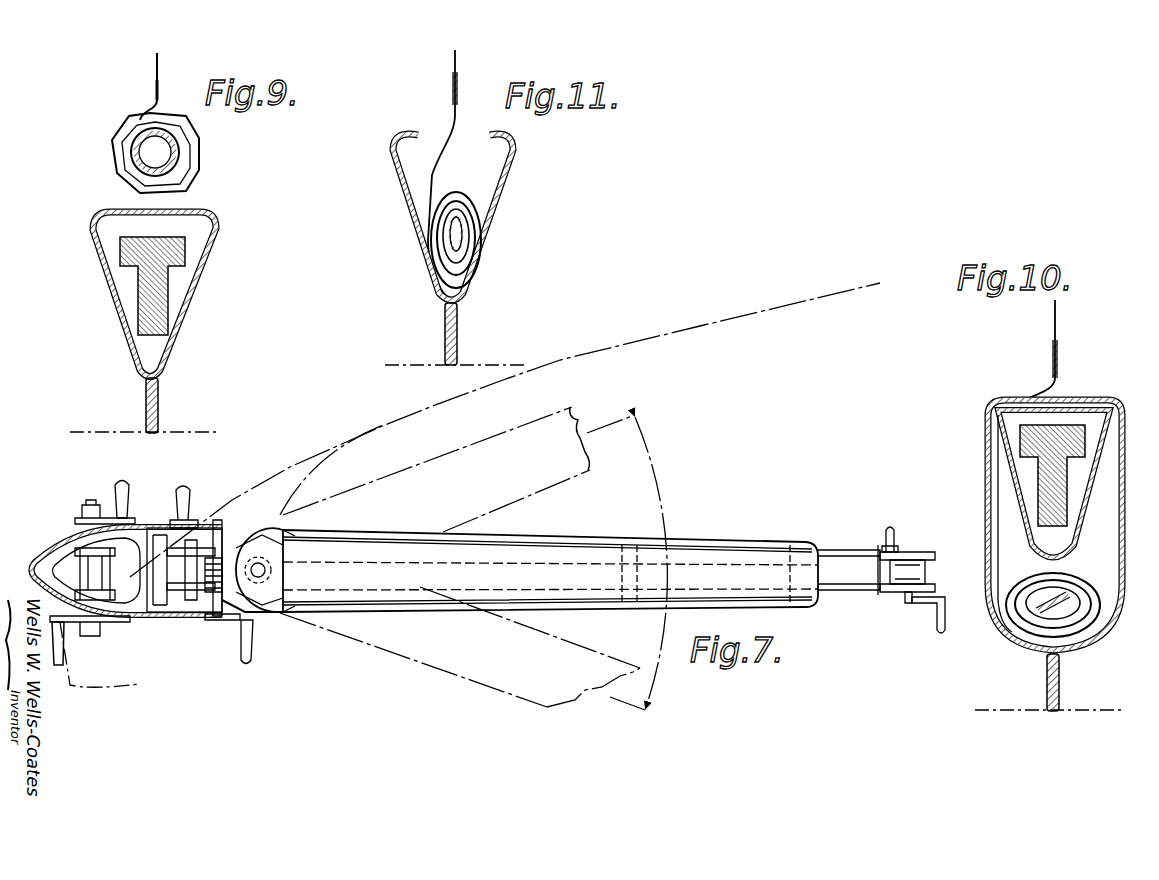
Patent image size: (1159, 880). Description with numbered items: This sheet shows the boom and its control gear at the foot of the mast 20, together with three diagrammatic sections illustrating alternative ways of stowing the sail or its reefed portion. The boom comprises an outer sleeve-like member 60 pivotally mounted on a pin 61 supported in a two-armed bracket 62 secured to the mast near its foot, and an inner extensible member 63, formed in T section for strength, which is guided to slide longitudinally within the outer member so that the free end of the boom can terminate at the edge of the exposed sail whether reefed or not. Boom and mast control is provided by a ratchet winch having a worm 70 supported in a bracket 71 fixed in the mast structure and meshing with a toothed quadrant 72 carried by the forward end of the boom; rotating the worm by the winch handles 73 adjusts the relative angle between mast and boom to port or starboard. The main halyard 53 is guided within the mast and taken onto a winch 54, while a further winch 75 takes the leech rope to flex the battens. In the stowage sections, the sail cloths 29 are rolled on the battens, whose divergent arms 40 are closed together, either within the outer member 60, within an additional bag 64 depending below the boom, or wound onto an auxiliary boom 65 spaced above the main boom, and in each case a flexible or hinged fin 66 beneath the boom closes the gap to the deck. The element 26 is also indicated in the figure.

In FIG. 7, the mast 20 is at (42, 556).
In FIG. 7, the clamping plates 26 is at (170, 545).
In FIG. 9, the sail cloths 29 is at (157, 62).
In FIG. 11, the sail cloths 29 is at (455, 61).
In FIG. 10, the sail cloths 29 is at (1057, 314).
In FIG. 9, the divergent arms 40 is at (157, 86).
In FIG. 11, the divergent arms 40 is at (455, 90).
In FIG. 10, the divergent arms 40 is at (1057, 349).
In FIG. 7, the main halyard 53 is at (78, 548).
In FIG. 7, the winch 54 is at (85, 624).
In FIG. 9, the outer sleeve-like member 60 is at (213, 248).
In FIG. 11, the outer sleeve-like member 60 is at (506, 205).
In FIG. 10, the outer sleeve-like member 60 is at (1000, 493).
In FIG. 7, the outer sleeve-like member 60 is at (588, 420).
In FIG. 7, the pin 61 is at (340, 533).
In FIG. 7, the two-armed bracket 62 is at (826, 548).
In FIG. 9, the inner extensible member 63 is at (168, 302).
In FIG. 10, the inner extensible member 63 is at (1055, 425).
In FIG. 10, the bag 64 is at (990, 521).
In FIG. 9, the auxiliary boom 65 is at (176, 154).
In FIG. 9, the fin 66 is at (146, 402).
In FIG. 11, the fin 66 is at (445, 320).
In FIG. 10, the fin 66 is at (1047, 677).
In FIG. 7, the worm 70 is at (212, 598).
In FIG. 7, the bracket 71 is at (165, 545).
In FIG. 7, the toothed quadrant 72 is at (240, 545).
In FIG. 7, the winch handles 73 is at (190, 510).
In FIG. 7, the winch 75 is at (888, 592).